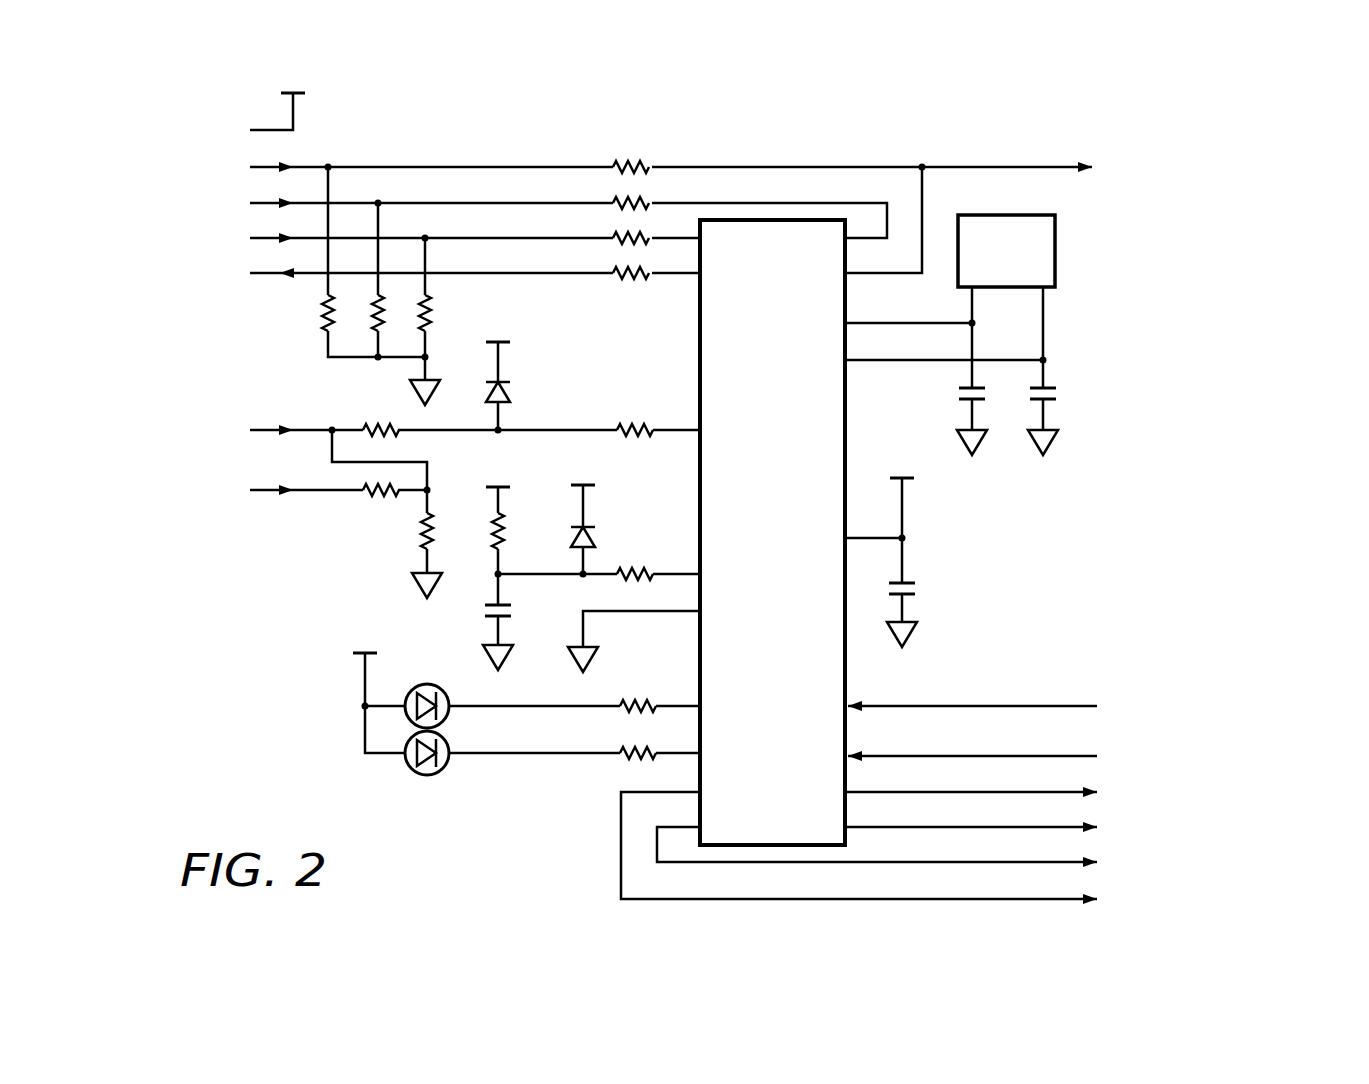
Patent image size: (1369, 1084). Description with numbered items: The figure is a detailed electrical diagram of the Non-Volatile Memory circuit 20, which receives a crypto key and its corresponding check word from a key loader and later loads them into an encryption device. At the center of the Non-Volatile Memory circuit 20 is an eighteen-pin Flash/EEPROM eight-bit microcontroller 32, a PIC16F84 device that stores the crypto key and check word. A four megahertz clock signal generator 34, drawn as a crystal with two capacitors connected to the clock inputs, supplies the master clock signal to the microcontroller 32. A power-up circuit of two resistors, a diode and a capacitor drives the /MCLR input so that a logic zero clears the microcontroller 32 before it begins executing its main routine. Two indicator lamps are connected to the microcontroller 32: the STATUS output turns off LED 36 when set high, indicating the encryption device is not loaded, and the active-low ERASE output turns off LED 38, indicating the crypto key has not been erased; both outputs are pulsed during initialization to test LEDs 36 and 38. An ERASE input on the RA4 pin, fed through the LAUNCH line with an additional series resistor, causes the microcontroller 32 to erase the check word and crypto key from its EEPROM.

The Non-Volatile Memory circuit 20 is at (707, 489).
The 18-pin Flash/EEPROM 8-bit microcontroller 32 is at (722, 340).
The 4 MHz clock signal generator 34 is at (1048, 238).
The STATUS LED 36 is at (445, 690).
The ERASE LED 38 is at (446, 776).